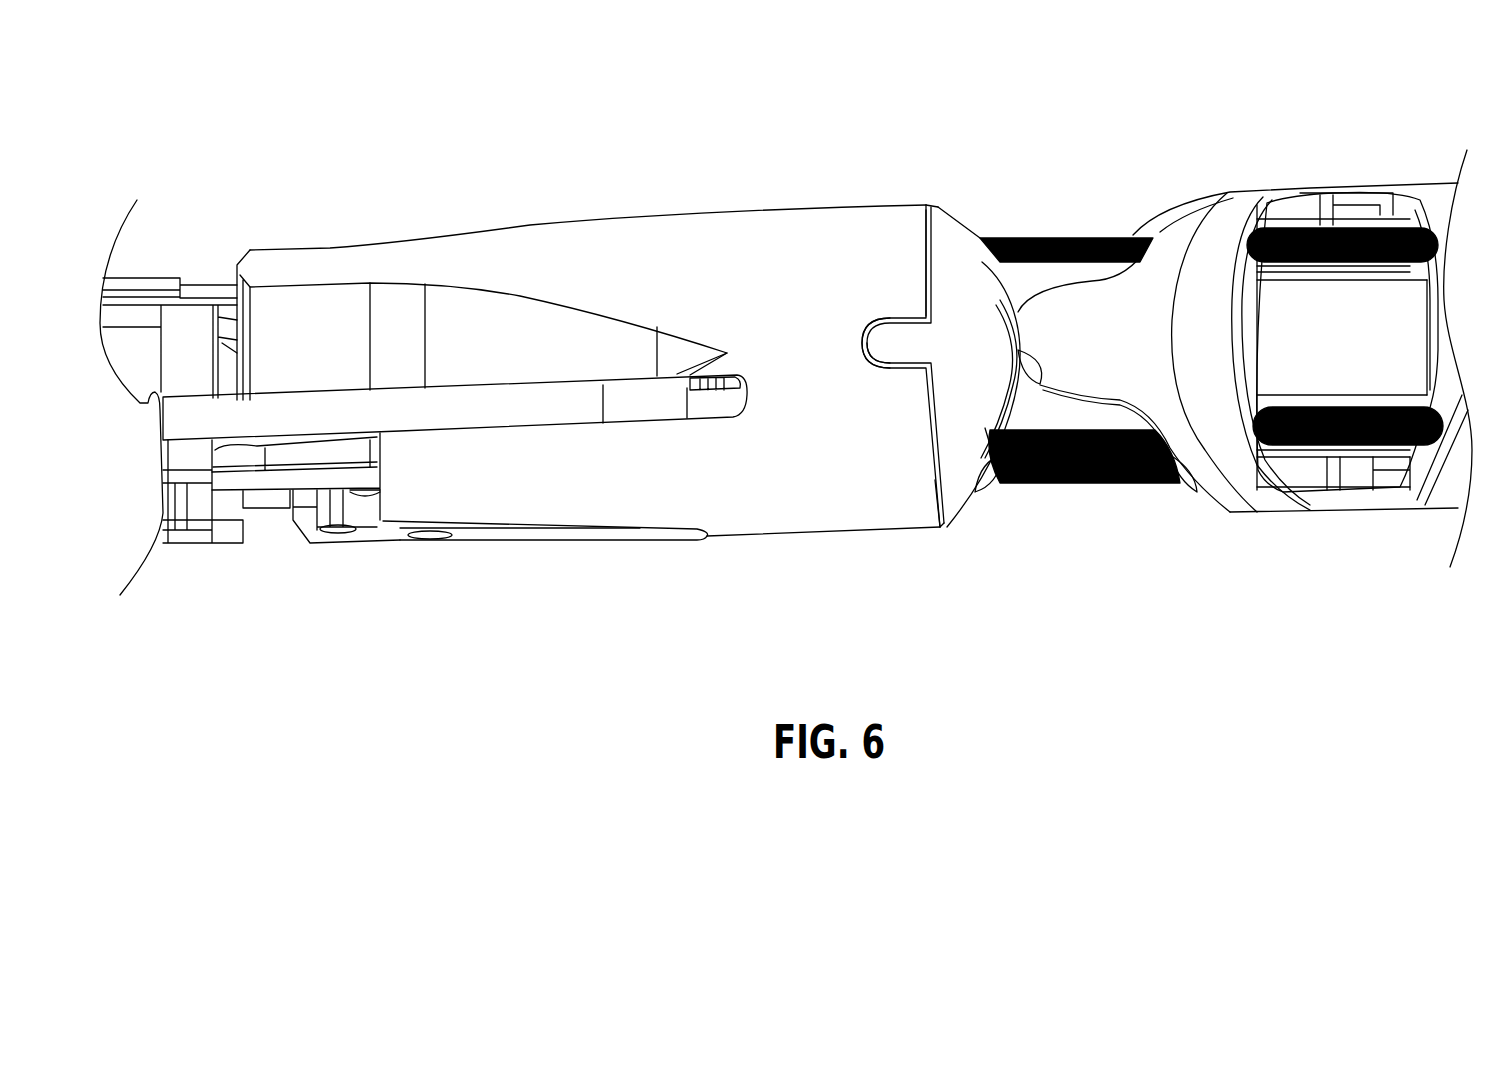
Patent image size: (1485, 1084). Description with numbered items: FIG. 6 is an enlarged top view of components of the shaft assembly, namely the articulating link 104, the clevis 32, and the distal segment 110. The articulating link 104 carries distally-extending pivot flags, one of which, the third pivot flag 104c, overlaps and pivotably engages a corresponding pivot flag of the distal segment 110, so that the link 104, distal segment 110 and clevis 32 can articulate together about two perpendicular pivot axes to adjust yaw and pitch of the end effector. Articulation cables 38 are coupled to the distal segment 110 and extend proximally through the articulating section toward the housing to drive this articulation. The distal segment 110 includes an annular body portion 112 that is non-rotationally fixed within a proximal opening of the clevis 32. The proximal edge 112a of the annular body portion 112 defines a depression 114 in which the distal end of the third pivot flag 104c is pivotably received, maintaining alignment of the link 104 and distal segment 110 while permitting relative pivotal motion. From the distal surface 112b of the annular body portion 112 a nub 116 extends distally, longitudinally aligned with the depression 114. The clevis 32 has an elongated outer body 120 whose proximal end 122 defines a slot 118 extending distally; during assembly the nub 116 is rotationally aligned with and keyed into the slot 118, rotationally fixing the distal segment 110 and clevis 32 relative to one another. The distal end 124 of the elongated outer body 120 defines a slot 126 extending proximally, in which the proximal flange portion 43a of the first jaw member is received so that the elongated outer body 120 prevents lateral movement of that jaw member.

The clevis 32 is at (513, 611).
The articulation cables 38 is at (1043, 238).
The proximal flange portion 43a is at (458, 410).
The articulating link 104 is at (1238, 512).
The third pivot flag 104c is at (1132, 293).
The distal segment 110 is at (950, 463).
The annular body portion 112 is at (938, 210).
The proximal edge 112a is at (965, 222).
The distal surface 112b is at (923, 238).
The depression 114 is at (1000, 457).
The nub 116 is at (902, 348).
The slot 118 is at (878, 321).
The elongated outer body 120 is at (706, 549).
The proximal end 122 is at (943, 530).
The distal end 124 is at (248, 248).
The slot 126 is at (677, 371).